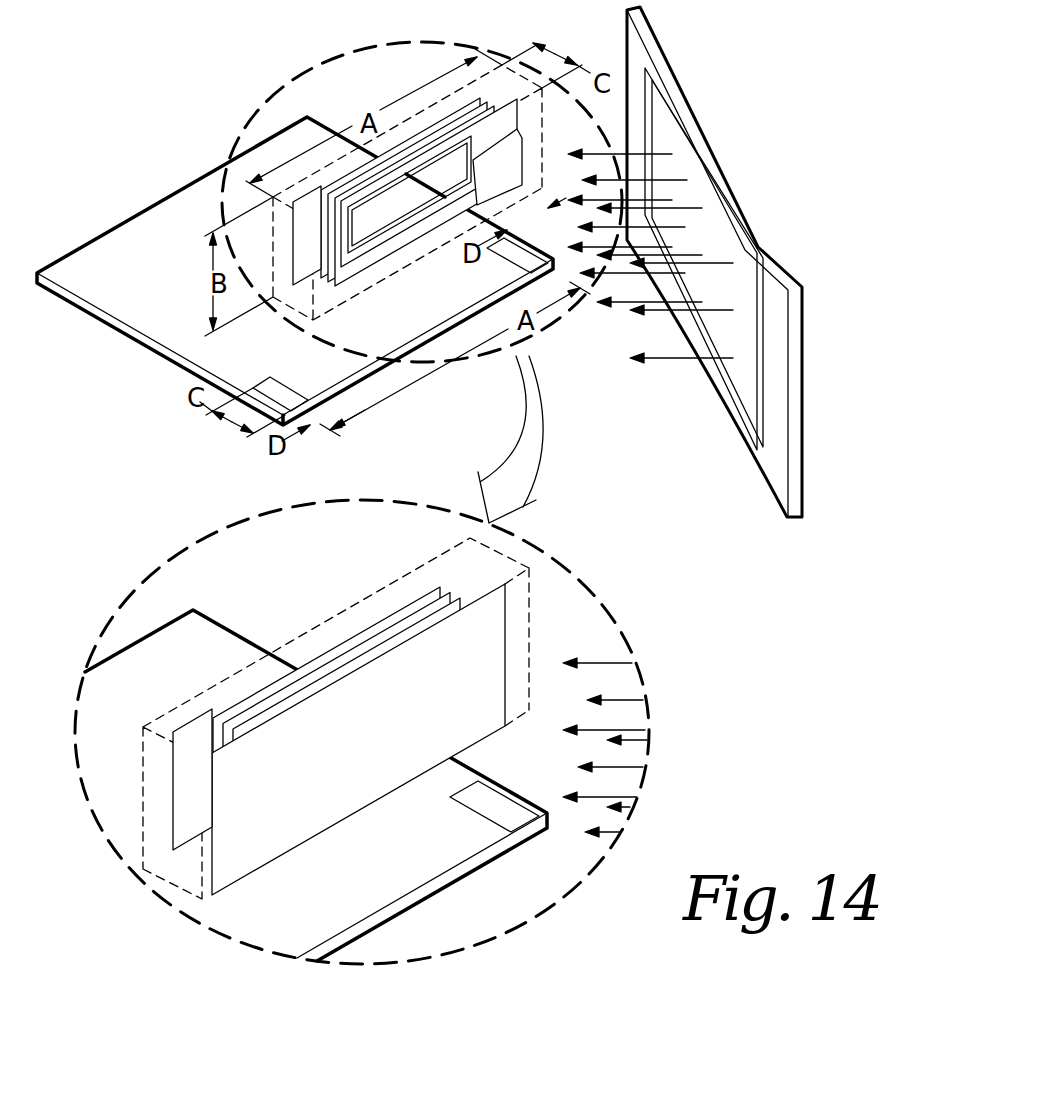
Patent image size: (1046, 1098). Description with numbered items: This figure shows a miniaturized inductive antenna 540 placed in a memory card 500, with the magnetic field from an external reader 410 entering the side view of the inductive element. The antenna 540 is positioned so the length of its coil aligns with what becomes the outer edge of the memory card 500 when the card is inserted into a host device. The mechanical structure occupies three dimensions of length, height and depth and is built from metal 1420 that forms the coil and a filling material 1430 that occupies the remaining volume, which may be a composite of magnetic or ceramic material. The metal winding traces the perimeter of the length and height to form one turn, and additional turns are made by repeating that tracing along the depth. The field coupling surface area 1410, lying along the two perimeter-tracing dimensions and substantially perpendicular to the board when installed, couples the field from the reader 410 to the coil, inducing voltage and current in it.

The memory card 500 is at (146, 217).
The antenna 540 is at (345, 496).
The reader 410 is at (745, 196).
The field coupling surface area 1410 is at (476, 731).
The metal 1420 is at (441, 588).
The filling material 1430 is at (232, 688).